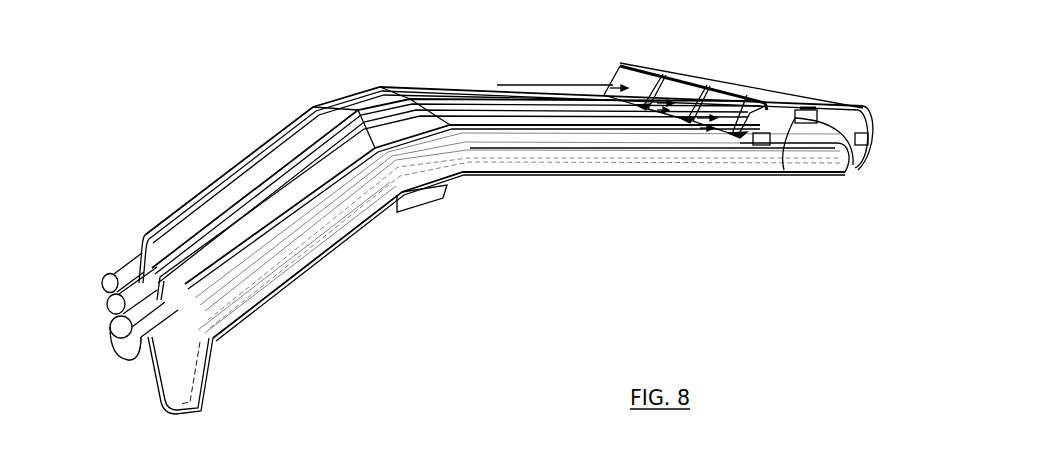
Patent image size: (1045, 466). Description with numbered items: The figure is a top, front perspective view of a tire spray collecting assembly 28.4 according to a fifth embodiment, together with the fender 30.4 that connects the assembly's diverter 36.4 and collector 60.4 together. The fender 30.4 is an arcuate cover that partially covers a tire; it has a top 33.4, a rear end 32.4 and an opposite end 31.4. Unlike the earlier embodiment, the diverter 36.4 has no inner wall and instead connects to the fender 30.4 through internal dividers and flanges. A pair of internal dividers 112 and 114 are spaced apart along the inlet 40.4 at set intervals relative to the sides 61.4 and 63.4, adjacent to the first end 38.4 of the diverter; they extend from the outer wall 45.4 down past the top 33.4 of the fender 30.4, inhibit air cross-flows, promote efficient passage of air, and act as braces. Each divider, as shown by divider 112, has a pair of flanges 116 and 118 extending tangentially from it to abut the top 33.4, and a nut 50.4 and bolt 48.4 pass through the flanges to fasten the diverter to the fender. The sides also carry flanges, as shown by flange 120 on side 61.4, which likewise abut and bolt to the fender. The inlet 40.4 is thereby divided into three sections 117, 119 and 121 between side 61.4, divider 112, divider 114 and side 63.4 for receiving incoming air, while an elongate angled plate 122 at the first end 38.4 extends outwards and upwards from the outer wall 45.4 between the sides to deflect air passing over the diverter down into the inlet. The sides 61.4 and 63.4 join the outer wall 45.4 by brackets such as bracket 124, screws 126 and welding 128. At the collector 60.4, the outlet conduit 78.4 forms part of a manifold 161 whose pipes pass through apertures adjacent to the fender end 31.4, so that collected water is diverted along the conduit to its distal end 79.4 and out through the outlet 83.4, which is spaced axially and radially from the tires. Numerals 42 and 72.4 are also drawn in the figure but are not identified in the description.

The tire spray collecting assembly 28.4 is at (218, 142).
The fender 30.4 is at (343, 91).
The top of the fender 33.4 is at (452, 110).
The diverter 36.4 is at (843, 94).
The side of the diverter 61.4 is at (853, 122).
The bracket 124 is at (868, 138).
The screws 126 is at (810, 108).
The rear end of the fender 32.4 is at (857, 168).
The welding 128 is at (797, 125).
The inlet section 117 is at (785, 165).
The flange 120 is at (752, 115).
The outer wall 45.4 is at (757, 93).
The first end of the diverter 38.4 is at (620, 65).
The inlet section 121 is at (637, 82).
The angled plate 122 is at (675, 92).
The internal divider 114 is at (678, 84).
The inlet section 119 is at (700, 98).
The internal divider 112 is at (722, 108).
The flow line 42 is at (515, 85).
The side of the diverter 63.4 is at (627, 90).
The inlet 40.4 is at (600, 80).
The bolt 48.4 is at (713, 122).
The nut 50.4 is at (683, 127).
The flange 116 is at (693, 120).
The flange 118 is at (690, 123).
The bottom cover 72.4 is at (450, 188).
The collector 60.4 is at (407, 203).
The end of the fender 31.4 is at (165, 408).
The outlet 83.4 is at (103, 273).
The distal end of the conduit 79.4 is at (99, 282).
The outlet conduit 78.4 is at (110, 333).
The manifold 161 is at (118, 365).